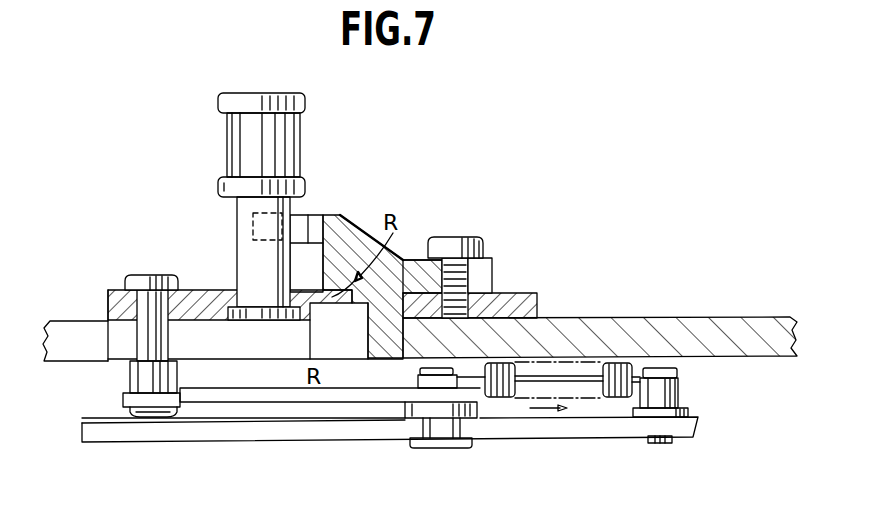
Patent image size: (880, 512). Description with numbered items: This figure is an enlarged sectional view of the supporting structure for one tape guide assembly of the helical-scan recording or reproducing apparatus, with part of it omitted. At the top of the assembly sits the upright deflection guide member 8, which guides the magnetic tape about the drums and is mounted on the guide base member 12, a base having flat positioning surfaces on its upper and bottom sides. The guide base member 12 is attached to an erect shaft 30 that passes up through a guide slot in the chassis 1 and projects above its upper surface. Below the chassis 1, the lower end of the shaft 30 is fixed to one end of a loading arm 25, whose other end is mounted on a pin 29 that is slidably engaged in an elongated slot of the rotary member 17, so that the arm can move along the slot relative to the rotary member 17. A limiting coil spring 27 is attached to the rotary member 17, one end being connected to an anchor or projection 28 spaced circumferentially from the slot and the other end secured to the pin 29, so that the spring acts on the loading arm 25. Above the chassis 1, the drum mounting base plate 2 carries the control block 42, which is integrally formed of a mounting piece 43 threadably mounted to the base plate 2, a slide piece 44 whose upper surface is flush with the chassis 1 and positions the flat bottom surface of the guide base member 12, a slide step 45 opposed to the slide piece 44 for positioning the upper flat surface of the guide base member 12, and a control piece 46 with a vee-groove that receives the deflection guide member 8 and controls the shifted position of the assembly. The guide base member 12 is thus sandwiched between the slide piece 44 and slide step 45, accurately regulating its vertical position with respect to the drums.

The chassis 1 is at (735, 327).
The drum mounting base plate 2 is at (537, 302).
The deflection guide member 8 is at (250, 122).
The guide base member 12 is at (202, 300).
The rotary member 17 is at (368, 437).
The loading arm 25 is at (282, 398).
The coil spring 27 is at (580, 388).
The anchor or projection 28 is at (677, 387).
The pin 29 is at (445, 440).
The erect shaft 30 is at (146, 297).
The control block 42 is at (358, 223).
The mounting piece 43 is at (485, 268).
The slide piece 44 is at (202, 358).
The slide step 45 is at (402, 262).
The control piece 46 is at (307, 214).